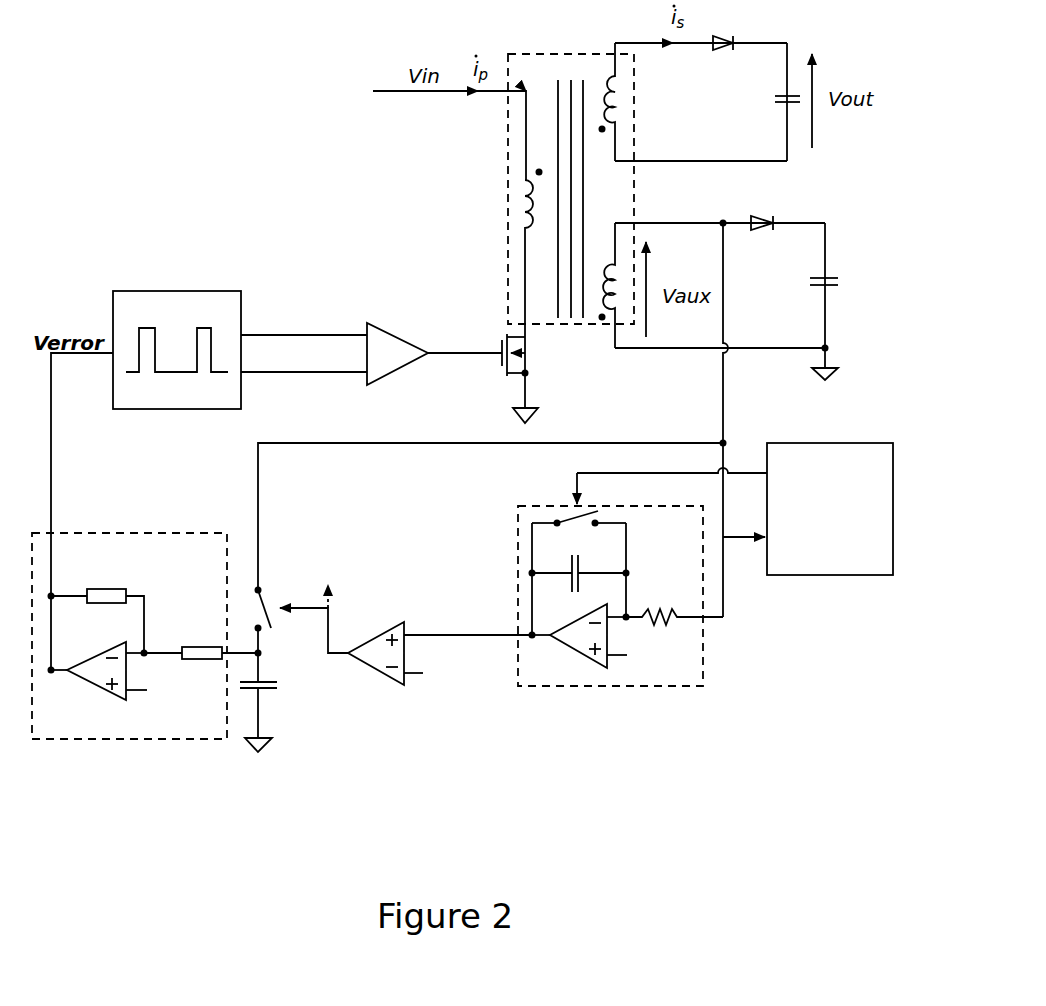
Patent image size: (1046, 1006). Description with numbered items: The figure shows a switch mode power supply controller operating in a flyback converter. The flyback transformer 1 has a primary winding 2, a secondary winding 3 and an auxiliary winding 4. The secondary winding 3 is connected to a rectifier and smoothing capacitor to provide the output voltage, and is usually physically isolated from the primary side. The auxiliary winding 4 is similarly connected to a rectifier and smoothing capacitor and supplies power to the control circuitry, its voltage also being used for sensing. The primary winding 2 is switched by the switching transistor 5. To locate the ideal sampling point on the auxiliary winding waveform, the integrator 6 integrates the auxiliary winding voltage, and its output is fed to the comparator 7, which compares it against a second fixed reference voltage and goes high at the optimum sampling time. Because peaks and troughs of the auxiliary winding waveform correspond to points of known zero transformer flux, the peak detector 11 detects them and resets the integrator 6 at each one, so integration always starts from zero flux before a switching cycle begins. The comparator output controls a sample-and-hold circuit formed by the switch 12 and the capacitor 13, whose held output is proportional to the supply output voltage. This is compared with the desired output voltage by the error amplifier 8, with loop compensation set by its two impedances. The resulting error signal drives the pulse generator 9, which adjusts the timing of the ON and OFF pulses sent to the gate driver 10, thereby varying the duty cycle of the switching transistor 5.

The flyback transformer 1 is at (571, 189).
The primary winding 2 is at (508, 203).
The secondary winding 3 is at (633, 97).
The auxiliary winding 4 is at (602, 334).
The switching transistor 5 is at (496, 385).
The integrator 6 is at (620, 579).
The comparator 7 is at (382, 696).
The error amplifier 8 is at (145, 636).
The pulse generator 9 is at (162, 420).
The gate driver 10 is at (393, 318).
The peak detector 11 is at (825, 590).
The switch 12 is at (284, 581).
The capacitor 13 is at (273, 707).